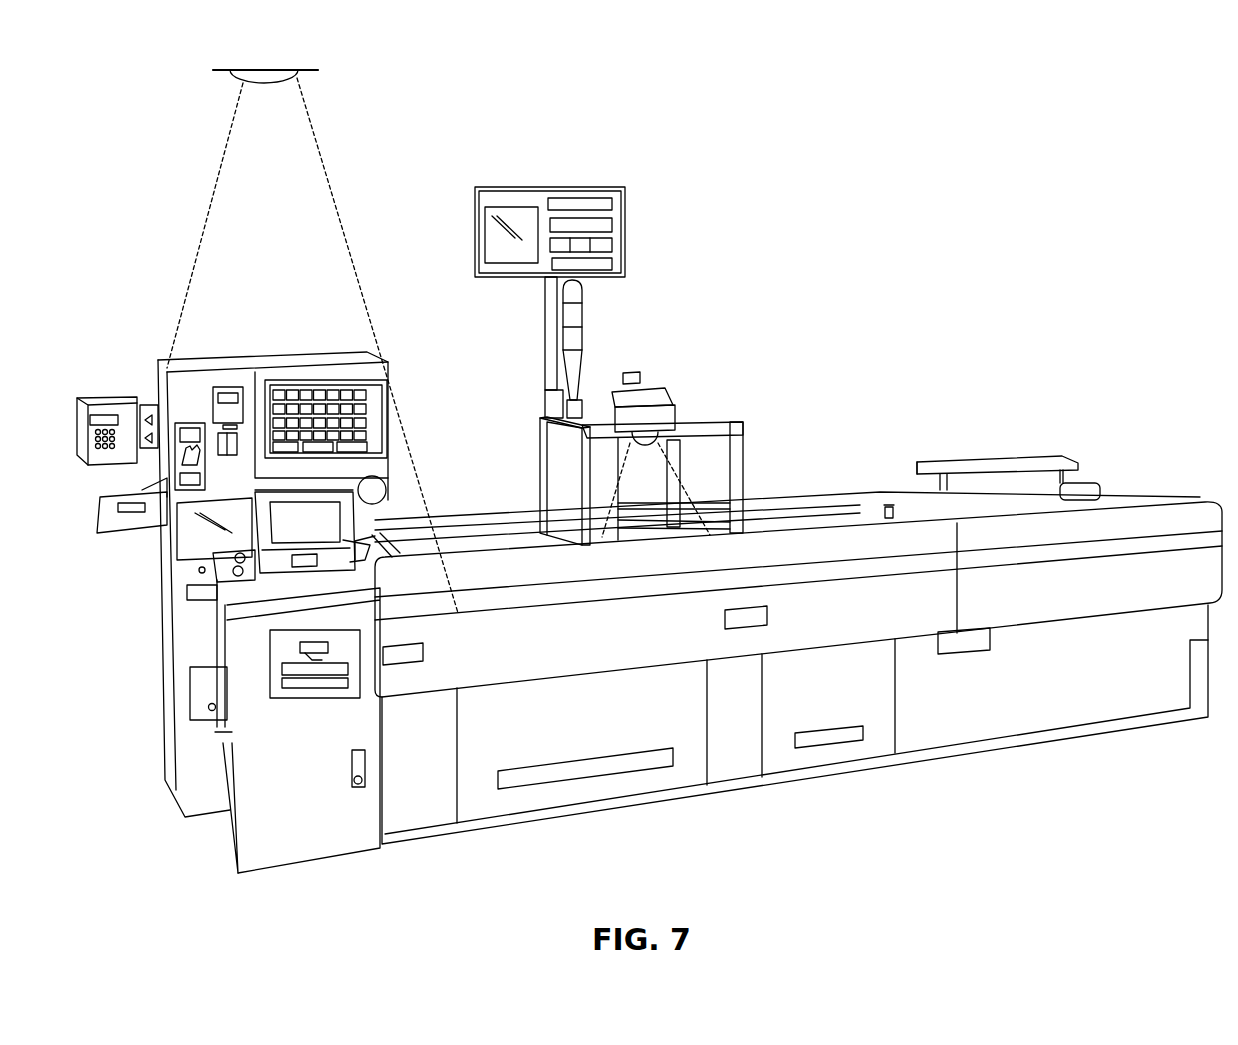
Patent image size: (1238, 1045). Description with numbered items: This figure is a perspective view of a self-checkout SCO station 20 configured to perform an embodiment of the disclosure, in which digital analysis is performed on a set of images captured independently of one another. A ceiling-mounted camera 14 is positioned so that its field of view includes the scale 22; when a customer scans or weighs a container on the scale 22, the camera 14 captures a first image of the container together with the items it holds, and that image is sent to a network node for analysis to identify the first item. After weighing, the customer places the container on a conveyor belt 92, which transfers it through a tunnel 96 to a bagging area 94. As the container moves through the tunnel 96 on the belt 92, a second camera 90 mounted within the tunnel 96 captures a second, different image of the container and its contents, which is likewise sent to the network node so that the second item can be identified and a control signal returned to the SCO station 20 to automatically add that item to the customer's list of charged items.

The camera 14 is at (250, 67).
The SCO station 20 is at (1105, 110).
The scale 22 is at (283, 557).
The camera 90 is at (642, 442).
The conveyor belt 92 is at (828, 476).
The bagging area 94 is at (1060, 500).
The tunnel 96 is at (744, 415).